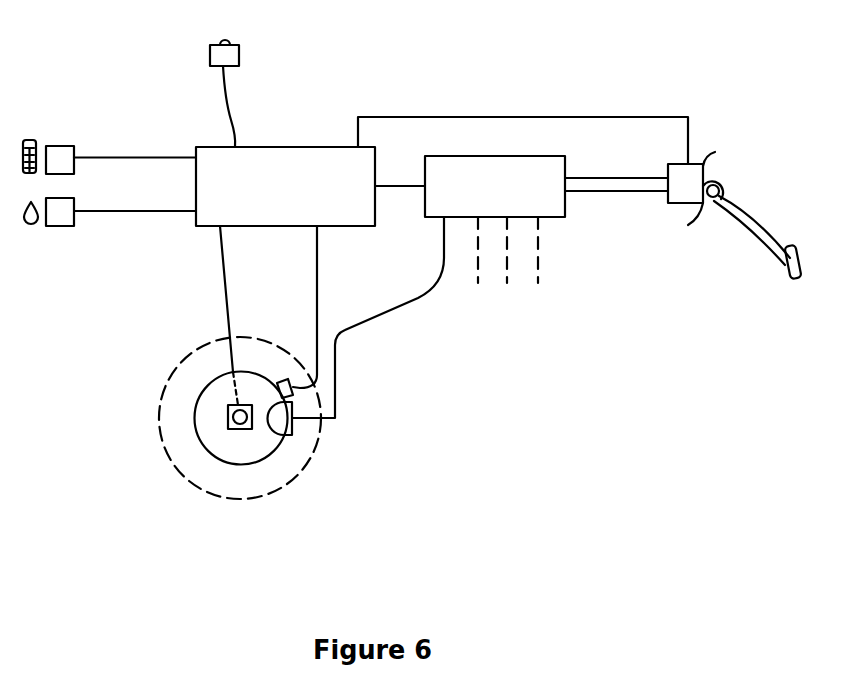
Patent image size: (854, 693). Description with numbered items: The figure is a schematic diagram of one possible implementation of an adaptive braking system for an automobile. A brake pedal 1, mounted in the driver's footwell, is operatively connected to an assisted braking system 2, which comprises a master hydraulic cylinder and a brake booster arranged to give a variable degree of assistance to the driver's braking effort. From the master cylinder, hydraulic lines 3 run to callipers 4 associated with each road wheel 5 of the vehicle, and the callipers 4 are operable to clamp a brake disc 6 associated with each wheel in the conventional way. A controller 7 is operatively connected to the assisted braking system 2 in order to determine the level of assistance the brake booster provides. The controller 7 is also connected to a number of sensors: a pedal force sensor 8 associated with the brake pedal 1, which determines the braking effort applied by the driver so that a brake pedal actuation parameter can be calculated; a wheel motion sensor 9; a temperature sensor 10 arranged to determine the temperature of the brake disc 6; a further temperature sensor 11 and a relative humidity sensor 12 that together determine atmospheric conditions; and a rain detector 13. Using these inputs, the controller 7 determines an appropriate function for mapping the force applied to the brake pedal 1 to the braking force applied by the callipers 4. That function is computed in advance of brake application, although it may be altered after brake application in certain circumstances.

The brake pedal 1 is at (753, 231).
The assisted braking system 2 is at (565, 213).
The hydraulic lines 3 is at (420, 300).
The callipers 4 is at (282, 432).
The road wheel 5 is at (170, 378).
The brake disc 6 is at (223, 464).
The controller 7 is at (290, 147).
The pedal force sensor 8 is at (688, 135).
The wheel motion sensor 9 is at (228, 418).
The temperature sensor 10 is at (283, 380).
The temperature sensor 11 is at (63, 146).
The relative humidity sensor 12 is at (62, 226).
The rain detector 13 is at (210, 57).